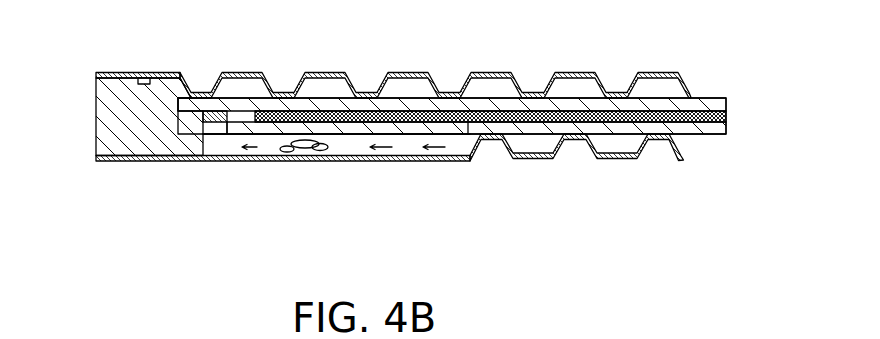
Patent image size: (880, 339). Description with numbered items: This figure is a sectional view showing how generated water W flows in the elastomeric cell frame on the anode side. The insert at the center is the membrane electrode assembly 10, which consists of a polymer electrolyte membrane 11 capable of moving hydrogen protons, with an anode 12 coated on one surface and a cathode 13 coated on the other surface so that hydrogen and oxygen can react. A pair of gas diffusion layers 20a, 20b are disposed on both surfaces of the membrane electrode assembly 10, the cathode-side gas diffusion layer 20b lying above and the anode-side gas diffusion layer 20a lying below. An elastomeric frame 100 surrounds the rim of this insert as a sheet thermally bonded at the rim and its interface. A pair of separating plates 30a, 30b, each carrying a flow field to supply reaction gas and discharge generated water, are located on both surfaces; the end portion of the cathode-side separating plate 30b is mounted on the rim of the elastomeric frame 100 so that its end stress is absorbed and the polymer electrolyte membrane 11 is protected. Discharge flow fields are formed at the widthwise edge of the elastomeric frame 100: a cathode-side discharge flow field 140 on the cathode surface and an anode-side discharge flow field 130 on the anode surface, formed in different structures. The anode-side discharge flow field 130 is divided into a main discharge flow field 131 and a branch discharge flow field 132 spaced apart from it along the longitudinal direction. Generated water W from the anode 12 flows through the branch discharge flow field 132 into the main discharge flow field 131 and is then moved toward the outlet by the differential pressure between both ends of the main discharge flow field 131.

The elastomeric frame 100 is at (110, 122).
The cathode-side separating plate 30b is at (160, 72).
The anode-side separating plate 30a is at (146, 161).
The cathode-side gas diffusion layer 20b is at (712, 98).
The anode-side gas diffusion layer 20a is at (712, 134).
The membrane electrode assembly 10 is at (462, 159).
The polymer electrolyte membrane 11 is at (728, 116).
The anode 12 is at (728, 128).
The cathode 13 is at (728, 104).
The cathode-side discharge flow field 140 is at (222, 111).
The anode-side discharge flow field 130 is at (243, 240).
The main discharge flow field 131 is at (246, 152).
The branch discharge flow field 132 is at (350, 152).
The water droplet W is at (308, 140).